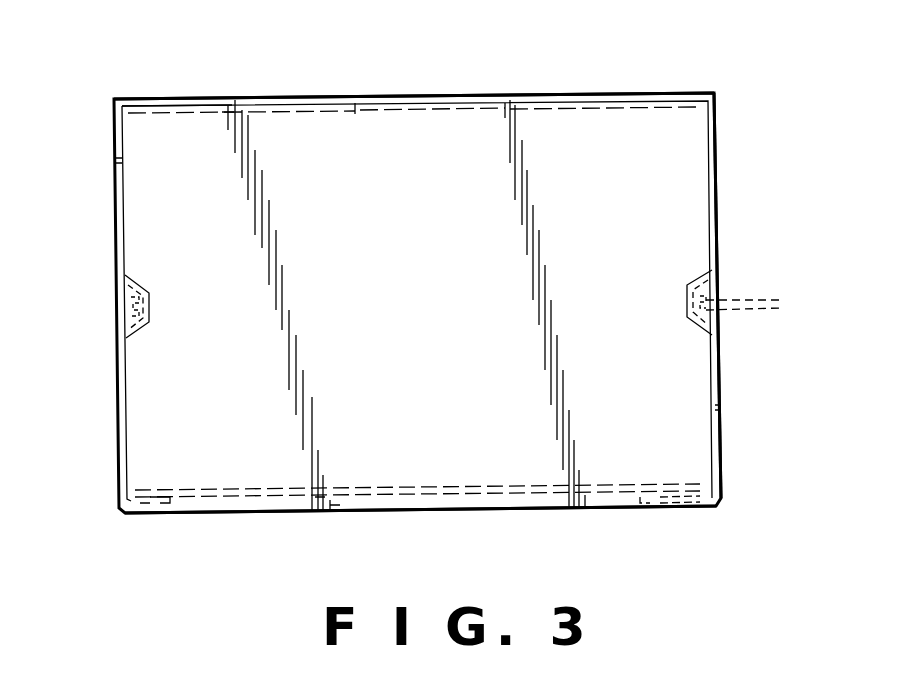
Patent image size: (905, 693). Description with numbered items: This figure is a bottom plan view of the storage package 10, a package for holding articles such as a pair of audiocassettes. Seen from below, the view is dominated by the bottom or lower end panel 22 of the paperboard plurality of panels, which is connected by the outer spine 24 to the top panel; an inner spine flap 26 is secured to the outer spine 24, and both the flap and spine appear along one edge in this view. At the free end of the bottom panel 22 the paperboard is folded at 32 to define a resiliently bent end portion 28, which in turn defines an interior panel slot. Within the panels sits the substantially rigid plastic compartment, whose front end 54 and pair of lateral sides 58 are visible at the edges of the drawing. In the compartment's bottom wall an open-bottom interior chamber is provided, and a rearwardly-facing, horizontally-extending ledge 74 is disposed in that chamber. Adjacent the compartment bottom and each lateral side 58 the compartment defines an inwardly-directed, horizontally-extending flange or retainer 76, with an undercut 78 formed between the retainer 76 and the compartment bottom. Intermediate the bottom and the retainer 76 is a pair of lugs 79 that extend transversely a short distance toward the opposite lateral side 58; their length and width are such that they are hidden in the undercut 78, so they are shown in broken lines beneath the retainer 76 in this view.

The storage package 10 is at (100, 234).
The bottom end panel 22 is at (356, 324).
The outer spine 24 is at (515, 500).
The inner spine flap 26 is at (649, 495).
The resiliently bent end portion 28 is at (200, 105).
The fold 32 is at (167, 110).
The front end 54 is at (492, 95).
The lateral sides 58 is at (714, 128).
The ledge 74 is at (408, 110).
The retainer 76 is at (712, 278).
The undercut 78 is at (685, 298).
The lugs 79 is at (755, 300).